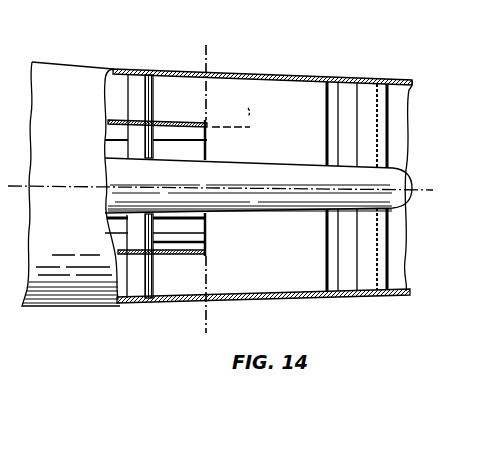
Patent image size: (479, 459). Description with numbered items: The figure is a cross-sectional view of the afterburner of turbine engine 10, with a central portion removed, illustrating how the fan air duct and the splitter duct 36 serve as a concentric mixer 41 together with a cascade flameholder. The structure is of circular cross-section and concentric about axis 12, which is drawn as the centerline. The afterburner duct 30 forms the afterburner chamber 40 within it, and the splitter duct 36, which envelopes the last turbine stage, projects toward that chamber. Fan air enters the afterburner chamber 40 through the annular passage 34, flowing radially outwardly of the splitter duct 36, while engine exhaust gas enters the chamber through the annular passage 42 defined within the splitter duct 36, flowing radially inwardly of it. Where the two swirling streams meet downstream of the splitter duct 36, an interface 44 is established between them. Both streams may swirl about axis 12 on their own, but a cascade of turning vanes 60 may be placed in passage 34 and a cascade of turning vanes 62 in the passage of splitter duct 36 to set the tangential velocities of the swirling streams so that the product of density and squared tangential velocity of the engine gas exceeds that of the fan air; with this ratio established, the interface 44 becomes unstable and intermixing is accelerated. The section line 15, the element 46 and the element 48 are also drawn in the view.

The turbine engine 10 is at (215, 47).
The axis 12 is at (55, 186).
The section line 15- 15 is at (206, 45).
The afterburner duct 30 is at (310, 80).
The annular fan air passage 34 is at (125, 54).
The splitter duct 36 is at (163, 254).
The afterburner chamber 40 is at (294, 144).
The concentric mixer 41 is at (217, 92).
The passage 42 is at (113, 146).
The interface 44 is at (231, 114).
The probe / inner tube 46 is at (268, 198).
The valve sleeve 48 is at (366, 135).
The cascade of turning vanes 60 is at (143, 101).
The cascade of turning vanes 62 is at (133, 231).